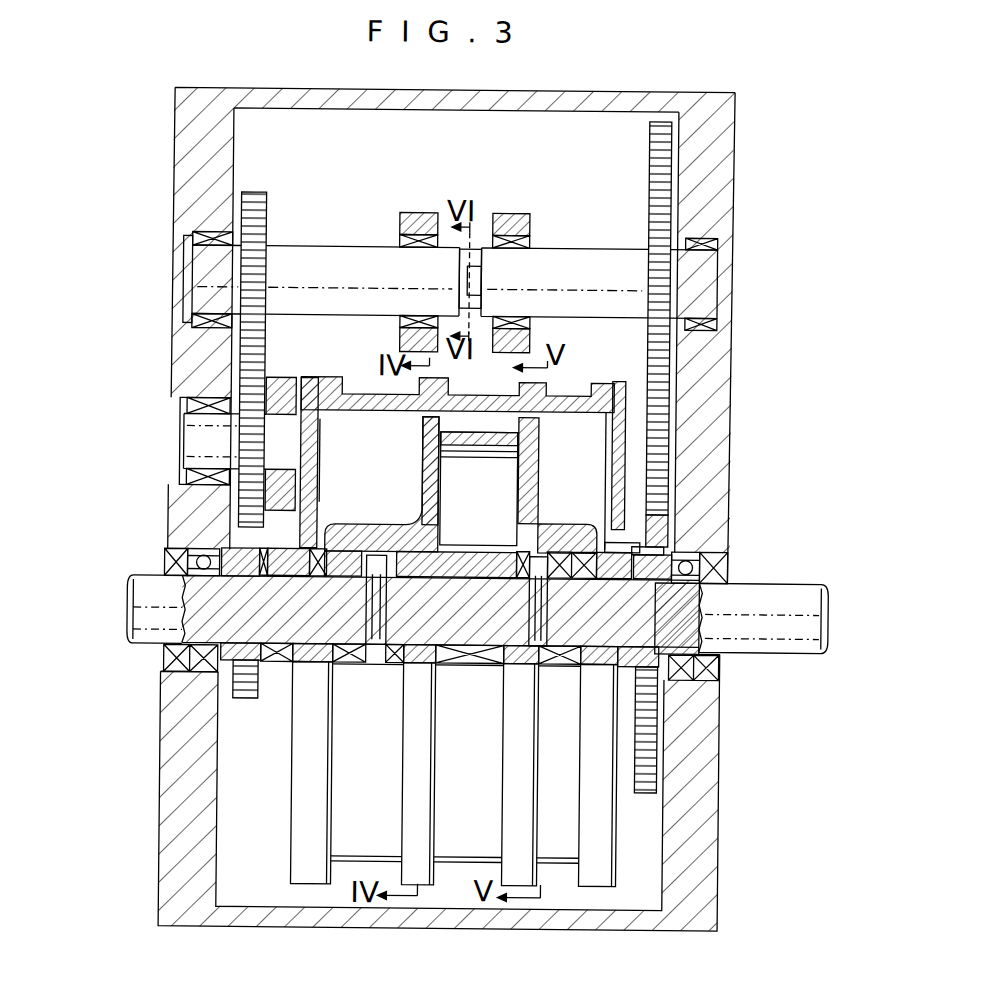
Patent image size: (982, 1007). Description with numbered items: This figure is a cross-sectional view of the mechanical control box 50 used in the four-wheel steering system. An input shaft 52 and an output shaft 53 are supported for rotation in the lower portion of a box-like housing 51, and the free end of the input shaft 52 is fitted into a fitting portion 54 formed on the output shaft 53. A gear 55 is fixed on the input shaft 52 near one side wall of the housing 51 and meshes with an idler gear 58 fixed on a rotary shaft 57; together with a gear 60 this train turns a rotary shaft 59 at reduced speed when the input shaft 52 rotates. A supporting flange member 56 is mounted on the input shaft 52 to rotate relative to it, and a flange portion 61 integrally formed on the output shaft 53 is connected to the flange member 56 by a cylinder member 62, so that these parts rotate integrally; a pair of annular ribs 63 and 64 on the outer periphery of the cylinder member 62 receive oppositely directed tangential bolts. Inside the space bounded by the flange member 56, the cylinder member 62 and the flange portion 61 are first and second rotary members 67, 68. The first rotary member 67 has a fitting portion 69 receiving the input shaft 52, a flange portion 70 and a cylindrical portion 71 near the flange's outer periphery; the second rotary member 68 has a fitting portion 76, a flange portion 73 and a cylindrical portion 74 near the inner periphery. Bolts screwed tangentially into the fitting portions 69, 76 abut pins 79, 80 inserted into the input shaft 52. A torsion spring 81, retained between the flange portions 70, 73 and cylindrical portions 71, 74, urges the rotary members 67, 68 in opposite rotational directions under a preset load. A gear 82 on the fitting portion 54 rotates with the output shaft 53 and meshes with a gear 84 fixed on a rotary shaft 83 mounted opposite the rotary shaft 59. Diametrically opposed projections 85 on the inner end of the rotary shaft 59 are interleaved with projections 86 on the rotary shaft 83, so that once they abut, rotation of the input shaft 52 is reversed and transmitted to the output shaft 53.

The gear box housing 50 is at (754, 143).
The housing 51 is at (711, 376).
The input shaft 52 is at (149, 583).
The output shaft 53 is at (785, 597).
The fitting portion 54 is at (689, 529).
The gear 55 is at (253, 701).
The supporting flange member 56 is at (313, 379).
The rotary shaft 57 is at (189, 433).
The idler gear 58 is at (257, 395).
The rotary shaft 59 is at (326, 262).
The gear 60 is at (251, 194).
The flange portion 61 is at (616, 379).
The cylinder member 62 is at (468, 903).
The annular rib 63 is at (393, 394).
The annular rib 64 is at (501, 345).
The first rotary member 67 is at (398, 497).
The second rotary member 68 is at (548, 508).
The fitting portion 69 is at (345, 525).
The flange portion 70 is at (419, 470).
The cylindrical portion 71 is at (488, 418).
The flange portion 73 is at (537, 448).
The cylindrical portion 74 is at (507, 545).
The fitting portion 76 is at (588, 540).
The pin 79 is at (382, 662).
The pin 80 is at (501, 663).
The torsion spring 81 is at (466, 458).
The gear 82 is at (648, 791).
The rotary shaft 83 is at (593, 257).
The gear 84 is at (657, 118).
The projections 85 is at (455, 275).
The projections 86 is at (468, 249).